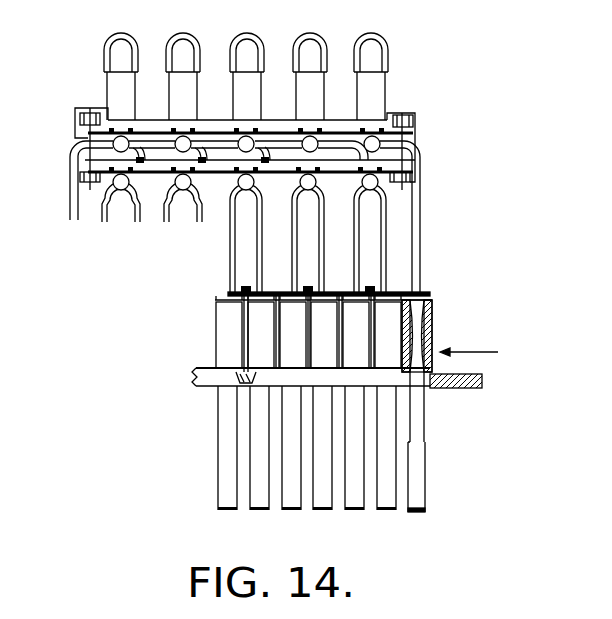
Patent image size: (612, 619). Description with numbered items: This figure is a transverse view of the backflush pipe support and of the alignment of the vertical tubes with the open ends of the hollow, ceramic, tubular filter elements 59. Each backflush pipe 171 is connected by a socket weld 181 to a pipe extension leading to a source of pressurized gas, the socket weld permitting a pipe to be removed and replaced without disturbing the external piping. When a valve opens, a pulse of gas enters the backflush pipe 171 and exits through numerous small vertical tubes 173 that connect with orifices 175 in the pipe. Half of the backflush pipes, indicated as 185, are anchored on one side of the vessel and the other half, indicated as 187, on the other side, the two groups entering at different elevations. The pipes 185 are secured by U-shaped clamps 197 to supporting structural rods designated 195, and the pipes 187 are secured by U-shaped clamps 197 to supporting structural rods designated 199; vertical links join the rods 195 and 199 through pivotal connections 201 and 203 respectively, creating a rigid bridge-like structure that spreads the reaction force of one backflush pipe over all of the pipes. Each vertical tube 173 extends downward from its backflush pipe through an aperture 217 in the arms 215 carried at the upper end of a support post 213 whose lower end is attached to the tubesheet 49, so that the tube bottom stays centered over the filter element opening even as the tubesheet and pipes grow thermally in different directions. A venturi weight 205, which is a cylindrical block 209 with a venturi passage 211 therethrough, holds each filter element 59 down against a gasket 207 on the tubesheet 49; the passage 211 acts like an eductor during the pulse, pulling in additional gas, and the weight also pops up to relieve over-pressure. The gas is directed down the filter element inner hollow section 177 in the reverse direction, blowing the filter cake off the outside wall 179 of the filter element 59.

The backflush pipe 171 is at (233, 82).
The socket weld 181 is at (317, 35).
The pivotal connection 201 is at (89, 104).
The pivotal connection 203 is at (90, 195).
The supporting structural rods 199 is at (215, 127).
The supporting structural rods 195 is at (155, 163).
The U-shaped clamp 197 is at (137, 137).
The venturi passage 211 is at (429, 294).
The orifice 175 is at (304, 208).
The backflush pipes 187 is at (251, 137).
The backflush pipes 185 is at (184, 192).
The small vertical tube 173 is at (316, 287).
The support post 213 is at (244, 289).
The arms 215 is at (253, 280).
The aperture 217 is at (226, 290).
The cylindrical block 209 is at (433, 338).
The venturi weight 205 is at (489, 353).
The gasket 207 is at (445, 390).
The filter element inner hollow section 177 is at (421, 432).
The outside wall 179 is at (421, 494).
The tubesheet 49 is at (199, 368).
The hollow, ceramic, tubular filter element 59 is at (202, 492).